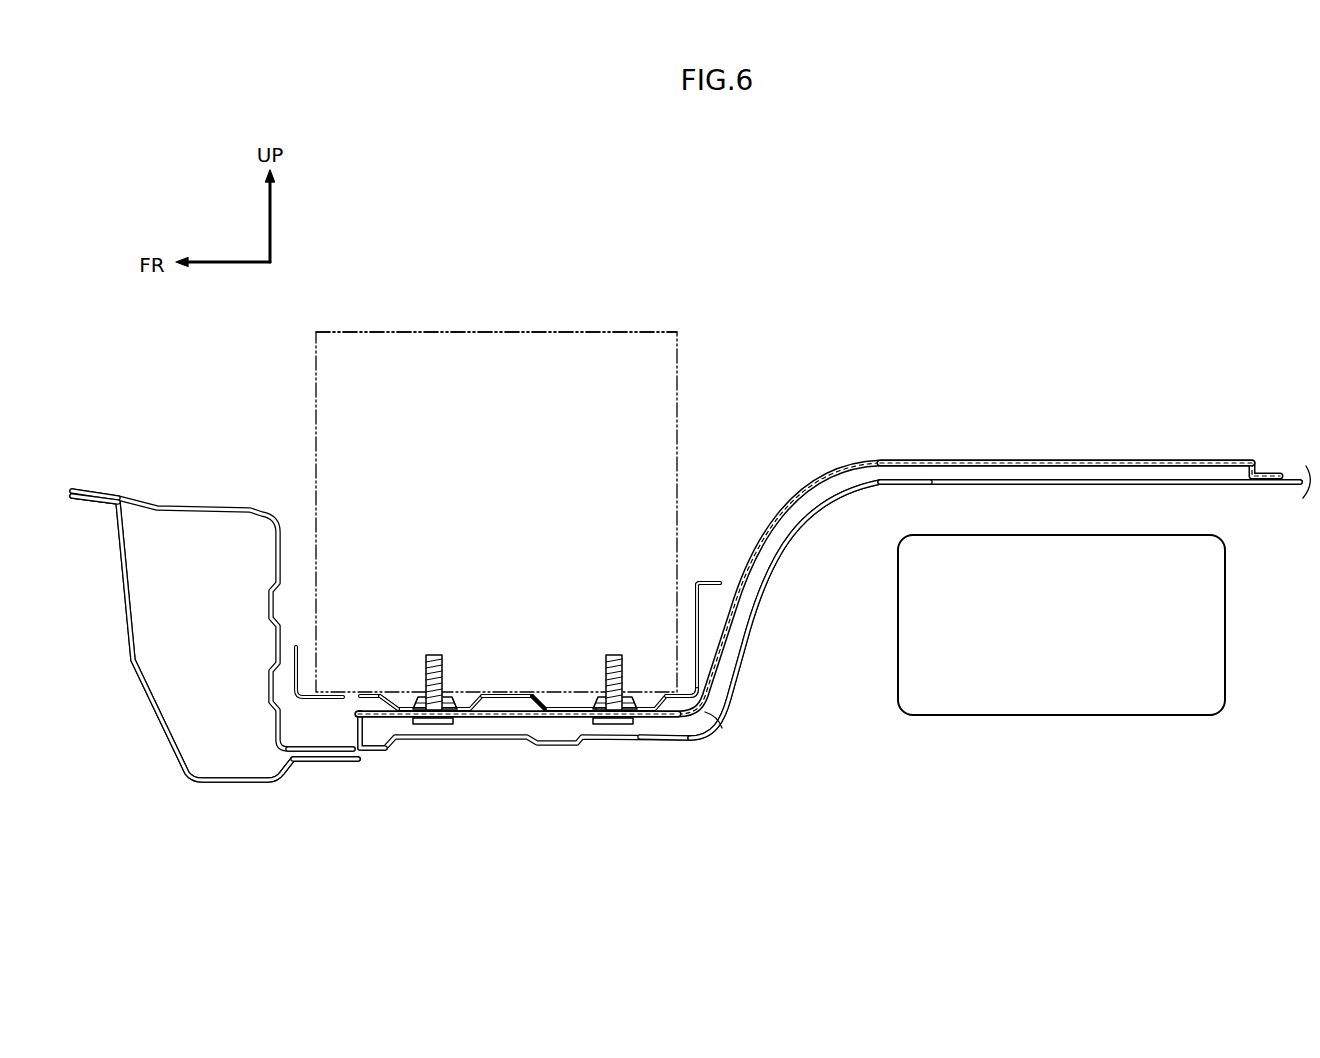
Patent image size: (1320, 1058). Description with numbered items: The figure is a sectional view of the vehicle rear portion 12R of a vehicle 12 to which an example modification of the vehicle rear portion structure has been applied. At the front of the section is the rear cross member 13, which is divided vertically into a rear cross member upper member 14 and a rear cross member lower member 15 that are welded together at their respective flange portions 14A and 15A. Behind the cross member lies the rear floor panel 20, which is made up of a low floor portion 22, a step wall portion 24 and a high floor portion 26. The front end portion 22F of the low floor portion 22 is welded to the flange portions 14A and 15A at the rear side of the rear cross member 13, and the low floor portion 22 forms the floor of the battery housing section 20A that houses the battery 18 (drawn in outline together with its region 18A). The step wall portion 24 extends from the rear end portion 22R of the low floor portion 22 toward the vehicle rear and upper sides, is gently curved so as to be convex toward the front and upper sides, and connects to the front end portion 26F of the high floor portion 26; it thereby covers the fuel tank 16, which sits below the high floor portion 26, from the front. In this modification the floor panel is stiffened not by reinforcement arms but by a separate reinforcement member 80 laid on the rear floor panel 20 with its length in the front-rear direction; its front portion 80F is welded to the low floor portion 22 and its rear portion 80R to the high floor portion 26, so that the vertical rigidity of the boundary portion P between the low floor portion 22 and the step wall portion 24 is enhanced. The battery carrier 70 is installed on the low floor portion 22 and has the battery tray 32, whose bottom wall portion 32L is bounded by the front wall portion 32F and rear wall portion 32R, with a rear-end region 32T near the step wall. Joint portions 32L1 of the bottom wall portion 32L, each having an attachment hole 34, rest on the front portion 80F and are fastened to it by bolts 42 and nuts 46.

The vehicle 12 is at (1152, 181).
The vehicle rear portion 12R is at (1142, 250).
The rear cross member 13 is at (150, 712).
The rear cross member upper member 14 is at (200, 507).
The flange portion 14A is at (100, 492).
The rear cross member lower member 15 is at (128, 633).
The flange portion 15A is at (92, 503).
The fuel tank 16 is at (1018, 715).
The battery 18 is at (595, 332).
The seat cushion 18A is at (513, 332).
The rear floor panel 20 is at (777, 572).
The battery housing section 20A is at (720, 500).
The low floor portion 22 is at (493, 742).
The front end portion 22F is at (365, 752).
The rear end portion 22R is at (673, 743).
The step wall portion 24 is at (757, 633).
The high floor portion 26 is at (1110, 483).
The front end portion 26F is at (897, 484).
The battery tray 32 is at (553, 714).
The front wall portion 32F is at (296, 665).
The bottom wall portion 32L is at (507, 695).
The joint portion 32L1 is at (407, 695).
The rear wall portion 32R is at (695, 640).
The tray tail portion 32T is at (678, 700).
The attachment hole 34 is at (433, 712).
The bolt 42 is at (432, 655).
The nut 46 is at (457, 707).
The battery carrier 70 is at (546, 688).
The reinforcement member 80 is at (881, 461).
The front portion 80F is at (473, 720).
The rear portion 80R is at (1053, 460).
The boundary portion P is at (717, 728).